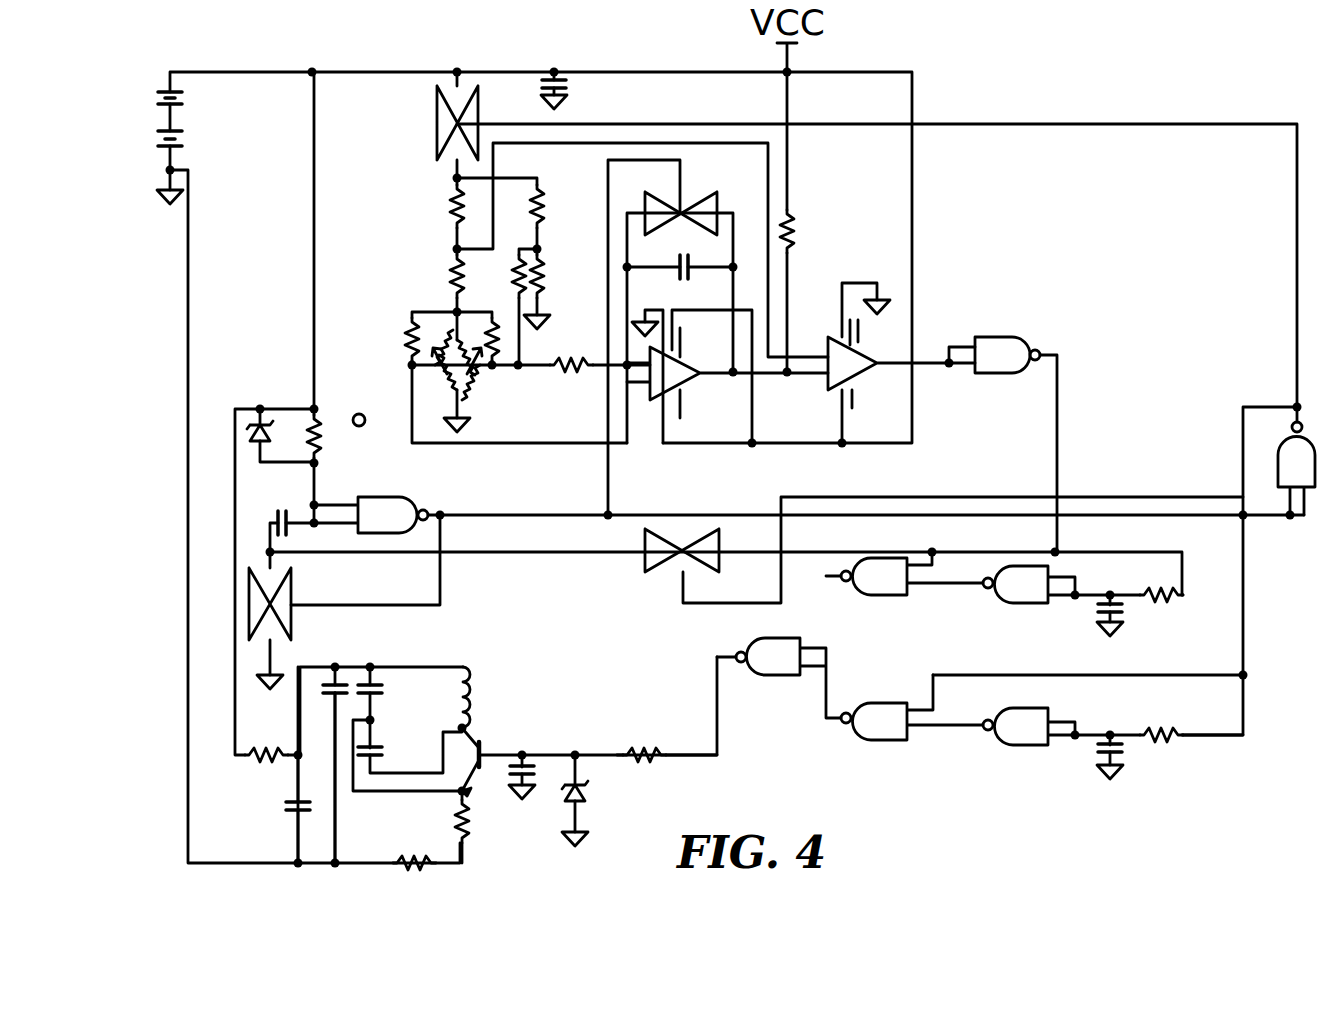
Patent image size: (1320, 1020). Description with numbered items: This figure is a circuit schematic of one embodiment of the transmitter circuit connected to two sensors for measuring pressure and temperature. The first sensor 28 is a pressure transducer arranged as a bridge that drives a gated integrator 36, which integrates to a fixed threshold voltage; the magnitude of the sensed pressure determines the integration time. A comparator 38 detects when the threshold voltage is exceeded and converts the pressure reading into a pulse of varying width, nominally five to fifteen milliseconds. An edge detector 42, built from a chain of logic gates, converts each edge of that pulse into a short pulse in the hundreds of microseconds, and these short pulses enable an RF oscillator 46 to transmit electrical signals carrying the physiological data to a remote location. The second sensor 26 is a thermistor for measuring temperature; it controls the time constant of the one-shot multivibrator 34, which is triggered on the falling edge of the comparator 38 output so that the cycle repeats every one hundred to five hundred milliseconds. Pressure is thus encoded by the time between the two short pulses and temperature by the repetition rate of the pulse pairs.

The second sensor 26 is at (306, 420).
The first sensor 28 is at (462, 372).
The one-shot multivibrator 34 is at (530, 598).
The gated integrator 36 is at (737, 426).
The comparator 38 is at (992, 298).
The edge detector 42 is at (902, 667).
The RF oscillator 46 is at (405, 843).